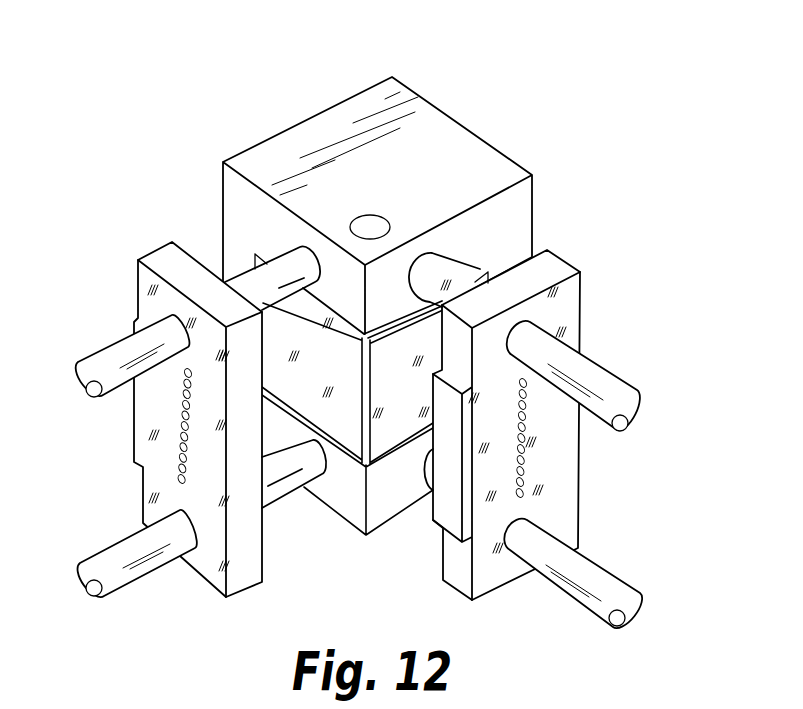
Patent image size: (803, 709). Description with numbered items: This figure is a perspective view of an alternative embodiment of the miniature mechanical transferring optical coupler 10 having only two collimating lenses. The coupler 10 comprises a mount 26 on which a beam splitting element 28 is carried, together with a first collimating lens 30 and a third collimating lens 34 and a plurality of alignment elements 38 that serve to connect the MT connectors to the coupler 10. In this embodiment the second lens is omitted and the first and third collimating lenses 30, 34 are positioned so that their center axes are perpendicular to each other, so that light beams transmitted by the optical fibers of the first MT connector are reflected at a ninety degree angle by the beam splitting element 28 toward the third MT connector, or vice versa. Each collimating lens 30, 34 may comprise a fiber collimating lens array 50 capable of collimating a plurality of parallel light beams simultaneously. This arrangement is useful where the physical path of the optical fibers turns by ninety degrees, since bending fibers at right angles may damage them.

The miniature mechanical transferring optical coupler 10 is at (343, 358).
The mount 26 is at (460, 157).
The beam splitting element 28 is at (340, 427).
The first collimating lens 30 is at (207, 563).
The third collimating lens 34 is at (568, 530).
The alignment element 38 is at (100, 363).
The fiber collimating lens array 50 is at (178, 462).